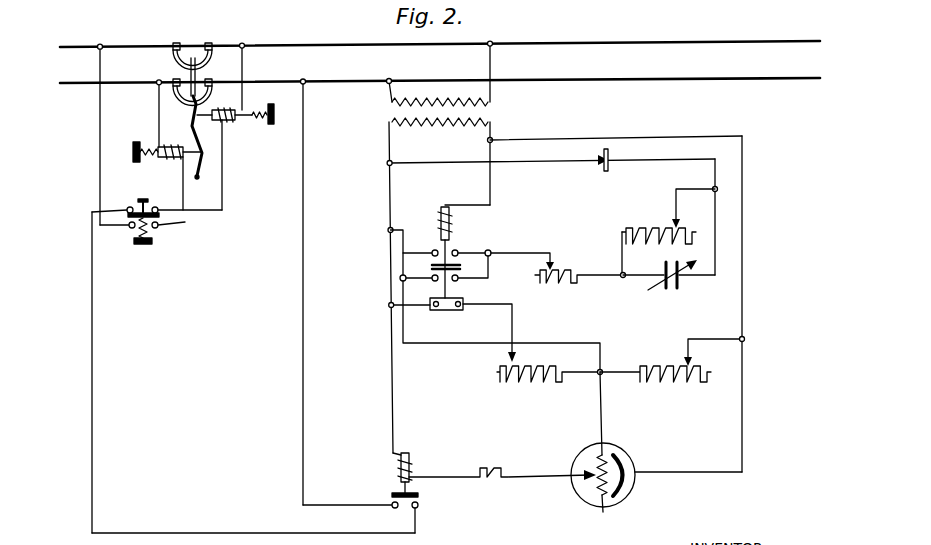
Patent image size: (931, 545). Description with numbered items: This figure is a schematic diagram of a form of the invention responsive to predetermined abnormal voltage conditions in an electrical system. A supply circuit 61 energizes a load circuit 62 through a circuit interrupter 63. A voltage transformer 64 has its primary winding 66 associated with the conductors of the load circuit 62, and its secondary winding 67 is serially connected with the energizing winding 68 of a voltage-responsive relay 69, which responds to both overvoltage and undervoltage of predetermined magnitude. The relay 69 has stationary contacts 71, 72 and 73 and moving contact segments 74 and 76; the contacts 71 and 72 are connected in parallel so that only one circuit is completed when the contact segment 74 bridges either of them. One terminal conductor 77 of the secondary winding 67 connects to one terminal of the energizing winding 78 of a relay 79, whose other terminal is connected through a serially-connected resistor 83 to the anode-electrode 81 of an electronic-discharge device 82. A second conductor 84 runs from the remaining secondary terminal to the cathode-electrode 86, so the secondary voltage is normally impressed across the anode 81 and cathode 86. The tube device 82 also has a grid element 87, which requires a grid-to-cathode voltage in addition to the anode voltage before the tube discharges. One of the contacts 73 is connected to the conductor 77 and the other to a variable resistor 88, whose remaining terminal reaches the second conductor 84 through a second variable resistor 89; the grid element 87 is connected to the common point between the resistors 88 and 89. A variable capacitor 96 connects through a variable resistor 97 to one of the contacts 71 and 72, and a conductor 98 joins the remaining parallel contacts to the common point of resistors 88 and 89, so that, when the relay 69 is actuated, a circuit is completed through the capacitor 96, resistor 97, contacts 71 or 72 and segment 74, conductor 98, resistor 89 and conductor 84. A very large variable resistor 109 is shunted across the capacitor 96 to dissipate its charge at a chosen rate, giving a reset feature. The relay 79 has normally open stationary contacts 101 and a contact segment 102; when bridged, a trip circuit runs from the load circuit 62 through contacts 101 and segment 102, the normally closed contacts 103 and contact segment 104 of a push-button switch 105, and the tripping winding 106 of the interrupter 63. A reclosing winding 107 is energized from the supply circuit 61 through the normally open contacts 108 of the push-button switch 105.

The supply circuit 61 is at (121, 50).
The load circuit 62 is at (340, 44).
The circuit interrupter 63 is at (200, 73).
The voltage transformer 64 is at (442, 87).
The primary winding 66 is at (492, 102).
The secondary winding 67 is at (492, 121).
The energizing winding 68 is at (438, 217).
The voltage-responsive relay 69 is at (444, 269).
The stationary contact 71 is at (432, 253).
The stationary contact 72 is at (432, 267).
The stationary contact 73 is at (433, 300).
The moving contact segment 74 is at (458, 267).
The moving contact segment 76 is at (466, 300).
The terminal conductor 77 is at (386, 166).
The energizing winding 78 is at (412, 460).
The relay 79 is at (413, 480).
The anode-electrode 81 is at (580, 482).
The electronic-discharge device 82 is at (643, 452).
The resistor 83 is at (504, 468).
The second conductor 84 is at (586, 136).
The cathode-electrode 86 is at (630, 488).
The grid element 87 is at (603, 512).
The variable resistor 88 is at (550, 366).
The second variable resistor 89 is at (675, 366).
The variable capacitor 96 is at (682, 287).
The variable resistor 97 is at (544, 285).
The conductor 98 is at (405, 343).
The stationary contacts 101 is at (418, 506).
The contact segment 102 is at (420, 495).
The normally closed contacts 103 is at (130, 207).
The contact segment 104 is at (175, 221).
The push-button switch 105 is at (145, 202).
The tripping winding 106 is at (240, 122).
The reclosing winding 107 is at (168, 158).
The normally open contacts 108 is at (150, 230).
The variable resistor 109 is at (628, 230).